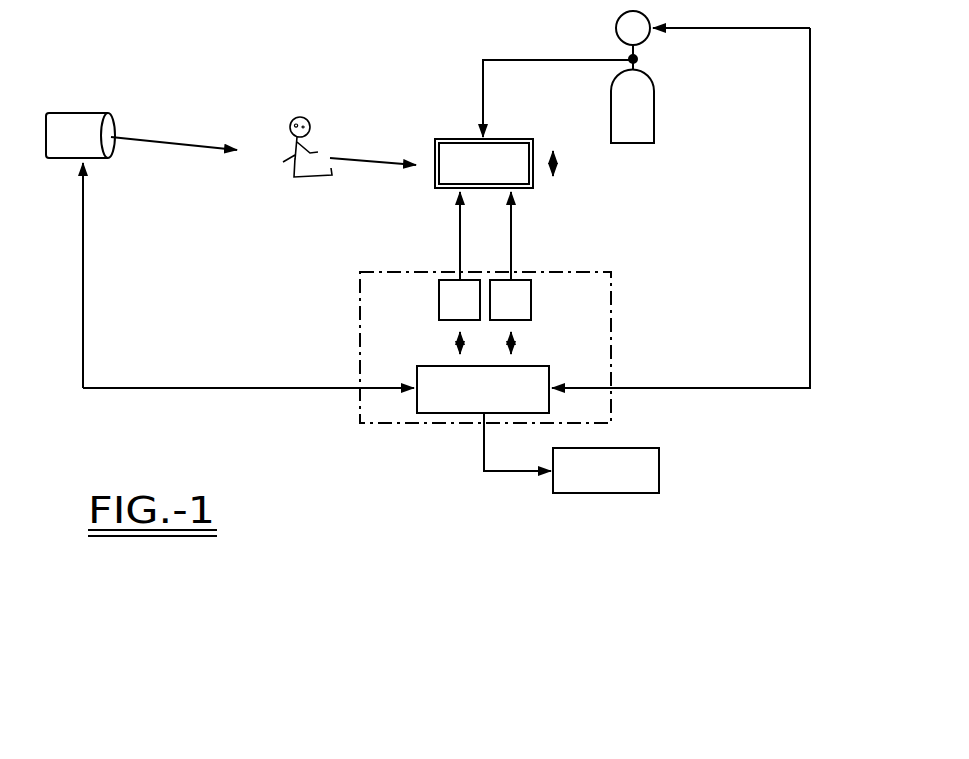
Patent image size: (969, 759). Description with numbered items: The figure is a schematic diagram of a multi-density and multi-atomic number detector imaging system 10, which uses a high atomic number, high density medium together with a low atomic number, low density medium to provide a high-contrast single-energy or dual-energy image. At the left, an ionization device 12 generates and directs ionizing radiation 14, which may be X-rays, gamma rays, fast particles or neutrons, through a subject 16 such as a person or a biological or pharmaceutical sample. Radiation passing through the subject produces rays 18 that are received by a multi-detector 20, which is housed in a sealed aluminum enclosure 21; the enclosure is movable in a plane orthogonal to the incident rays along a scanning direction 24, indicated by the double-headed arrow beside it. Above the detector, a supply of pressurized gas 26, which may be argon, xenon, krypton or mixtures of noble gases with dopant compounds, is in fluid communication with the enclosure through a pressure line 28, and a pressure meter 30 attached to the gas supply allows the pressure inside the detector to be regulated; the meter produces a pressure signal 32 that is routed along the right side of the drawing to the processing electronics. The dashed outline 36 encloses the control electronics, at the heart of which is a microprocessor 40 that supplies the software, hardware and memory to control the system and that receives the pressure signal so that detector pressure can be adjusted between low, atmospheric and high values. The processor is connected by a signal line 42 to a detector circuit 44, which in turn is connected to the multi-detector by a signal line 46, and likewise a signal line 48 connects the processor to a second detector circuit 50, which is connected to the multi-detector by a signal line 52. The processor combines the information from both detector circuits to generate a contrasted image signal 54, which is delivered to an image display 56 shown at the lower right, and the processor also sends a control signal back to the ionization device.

The multi-density and multi-atomic number detector imaging system 10 is at (222, 55).
The ionization device 12 is at (60, 113).
The ionizing radiation 14 is at (173, 143).
The subject 16 is at (297, 139).
The rays 18 is at (340, 158).
The multi-detector 20 is at (444, 190).
The sealed aluminum enclosure 21 is at (435, 178).
The scanning direction 24 is at (553, 168).
The pressurized gas 26 is at (654, 116).
The pressure line 28 is at (483, 78).
The pressure meter 30 is at (616, 28).
The pressure signal 32 is at (810, 172).
The controller enclosure 36 is at (611, 302).
The microprocessor 40 is at (500, 403).
The signal line 42 is at (460, 345).
The detector circuit 44 is at (473, 313).
The signal line 46 is at (460, 246).
The signal line 48 is at (511, 343).
The detector circuit 50 is at (524, 313).
The signal line 52 is at (511, 246).
The contrasted image signal 54 is at (484, 478).
The image display 56 is at (606, 494).